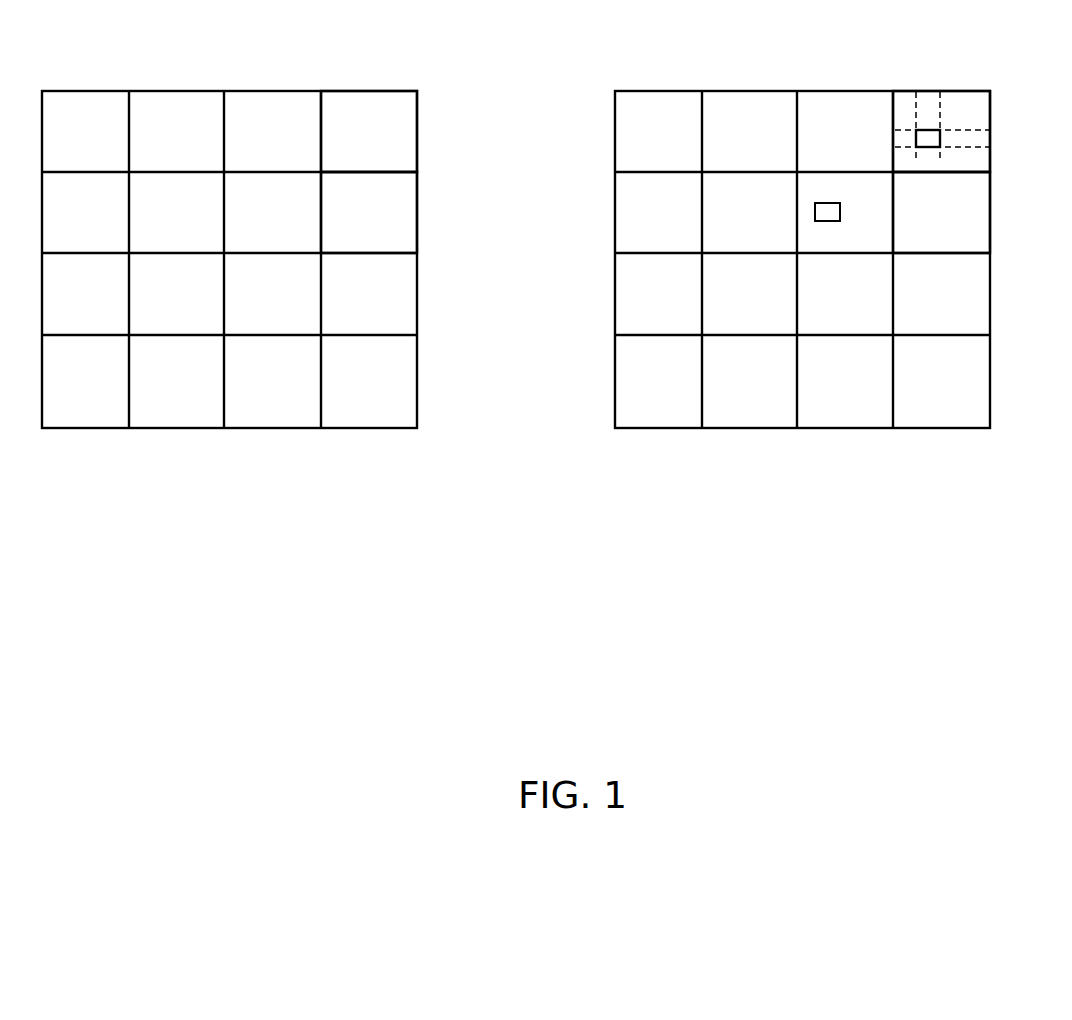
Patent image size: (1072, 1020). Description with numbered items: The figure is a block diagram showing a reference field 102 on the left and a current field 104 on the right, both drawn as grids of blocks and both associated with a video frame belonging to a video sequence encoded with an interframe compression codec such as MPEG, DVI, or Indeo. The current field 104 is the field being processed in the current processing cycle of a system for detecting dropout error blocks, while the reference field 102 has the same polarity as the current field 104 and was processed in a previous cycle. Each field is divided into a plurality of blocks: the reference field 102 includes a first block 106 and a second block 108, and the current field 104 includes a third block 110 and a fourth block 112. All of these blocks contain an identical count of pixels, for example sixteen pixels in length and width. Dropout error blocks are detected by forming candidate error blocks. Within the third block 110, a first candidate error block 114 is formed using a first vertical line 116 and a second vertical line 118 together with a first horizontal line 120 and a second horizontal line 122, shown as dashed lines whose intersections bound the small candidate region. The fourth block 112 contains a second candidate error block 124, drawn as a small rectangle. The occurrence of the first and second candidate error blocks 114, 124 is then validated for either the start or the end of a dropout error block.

The reference field 102 is at (418, 300).
The current field 104 is at (992, 296).
The first block 106 is at (418, 130).
The second block 108 is at (323, 211).
The third block 110 is at (991, 160).
The fourth block 112 is at (897, 215).
The first candidate error block 114 is at (916, 133).
The first vertical line 116 is at (912, 96).
The second vertical line 118 is at (941, 105).
The first horizontal line 120 is at (989, 130).
The second horizontal line 122 is at (897, 147).
The second candidate error block 124 is at (815, 211).